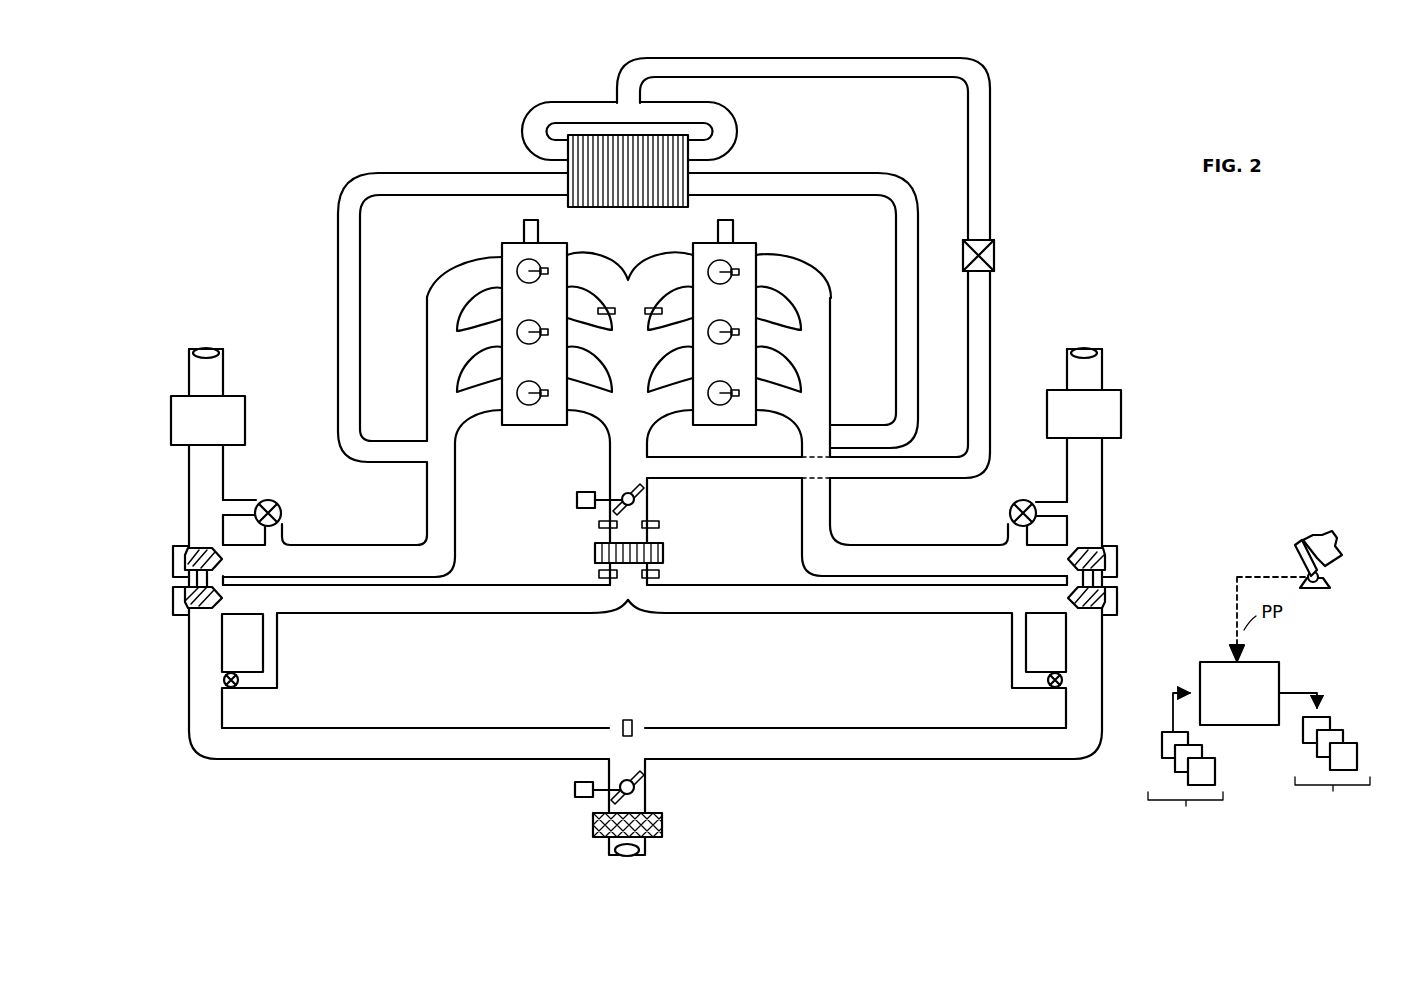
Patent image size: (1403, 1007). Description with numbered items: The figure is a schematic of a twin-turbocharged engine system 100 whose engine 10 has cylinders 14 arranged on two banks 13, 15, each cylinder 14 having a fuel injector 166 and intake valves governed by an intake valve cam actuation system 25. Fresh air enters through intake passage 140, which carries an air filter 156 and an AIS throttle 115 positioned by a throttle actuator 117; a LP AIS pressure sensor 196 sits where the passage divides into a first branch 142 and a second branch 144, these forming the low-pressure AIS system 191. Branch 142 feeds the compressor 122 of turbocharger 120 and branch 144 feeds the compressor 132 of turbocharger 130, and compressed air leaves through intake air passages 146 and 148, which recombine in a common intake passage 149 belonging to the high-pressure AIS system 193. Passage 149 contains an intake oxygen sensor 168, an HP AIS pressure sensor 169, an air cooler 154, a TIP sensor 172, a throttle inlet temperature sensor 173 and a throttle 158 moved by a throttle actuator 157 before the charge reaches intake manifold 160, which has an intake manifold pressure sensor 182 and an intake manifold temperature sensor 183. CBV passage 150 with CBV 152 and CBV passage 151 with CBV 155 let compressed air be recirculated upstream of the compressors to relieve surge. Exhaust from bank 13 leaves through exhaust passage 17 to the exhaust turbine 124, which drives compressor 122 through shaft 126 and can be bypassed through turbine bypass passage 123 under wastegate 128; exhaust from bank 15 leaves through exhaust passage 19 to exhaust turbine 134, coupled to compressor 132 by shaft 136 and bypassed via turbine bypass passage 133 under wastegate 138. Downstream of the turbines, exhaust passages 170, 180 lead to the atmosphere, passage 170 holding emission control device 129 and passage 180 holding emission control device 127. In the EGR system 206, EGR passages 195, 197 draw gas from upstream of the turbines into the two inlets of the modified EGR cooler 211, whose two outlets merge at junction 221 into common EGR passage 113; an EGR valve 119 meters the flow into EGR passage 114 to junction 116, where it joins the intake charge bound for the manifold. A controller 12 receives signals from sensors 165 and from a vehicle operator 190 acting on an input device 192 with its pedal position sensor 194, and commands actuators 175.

The turbocharged engine system 100 is at (220, 198).
The EGR system 206 is at (470, 116).
The junction 221 is at (614, 100).
The common EGR passage 113 is at (800, 80).
The modified EGR cooler 211 is at (700, 172).
The EGR valve 119 is at (990, 272).
The internal combustion engine 10 is at (438, 255).
The second bank 15 is at (507, 244).
The first bank 13 is at (748, 244).
The intake valve cam actuation system 25 is at (540, 230).
The cylinder 14 is at (731, 330).
The intake manifold 160 is at (629, 273).
The intake manifold pressure sensor 182 is at (607, 308).
The intake manifold temperature sensor 183 is at (653, 308).
The fuel injector 166 is at (739, 332).
The EGR passage 195 is at (338, 302).
The EGR passage 197 is at (895, 333).
The common exhaust passage 19 is at (456, 470).
The junction 116 is at (651, 456).
The common exhaust passage 17 is at (801, 520).
The EGR passage 114 is at (862, 480).
The exhaust passage 180 is at (189, 390).
The emission control device 127 is at (208, 420).
The turbine bypass passage 133 is at (238, 502).
The wastegate 138 is at (279, 505).
The turbocharger 130 is at (203, 531).
The compressor 132 is at (188, 610).
The exhaust turbine 134 is at (190, 550).
The shaft 136 is at (188, 592).
The exhaust passage 170 is at (1067, 386).
The emission control device 129 is at (1084, 414).
The turbine bypass passage 123 is at (1054, 502).
The wastegate 128 is at (1012, 505).
The turbocharger 120 is at (1087, 533).
The compressor 122 is at (1104, 610).
The exhaust turbine 124 is at (1104, 551).
The shaft 126 is at (1112, 592).
The intake air passage 148 is at (425, 599).
The intake air passage 146 is at (847, 656).
The throttle actuator 157 is at (577, 496).
The throttle 158 is at (624, 494).
The common intake passage 149 is at (648, 508).
The throttle inlet pressure sensor 172 is at (598, 528).
The throttle inlet temperature sensor 173 is at (660, 523).
The air cooler 154 is at (664, 550).
The HP AIS pressure sensor 169 is at (598, 576).
The intake oxygen sensor 168 is at (660, 576).
The CBV passage 150 is at (278, 672).
The compressor bypass valve 152 is at (234, 686).
The CBV passage 151 is at (1011, 676).
The compressor bypass valve 155 is at (1052, 688).
The second branch of the intake passage 144 is at (415, 740).
The first branch of the intake passage 142 is at (855, 740).
The high-pressure AIS system 193 is at (747, 634).
The low-pressure AIS system 191 is at (754, 702).
The LP AIS pressure sensor 196 is at (627, 719).
The intake passage 140 is at (646, 852).
The throttle actuator 117 is at (576, 784).
The AIS throttle 115 is at (629, 778).
The air filter 156 is at (662, 822).
The controller 12 is at (1239, 693).
The input device 192 is at (1293, 550).
The vehicle operator 190 is at (1322, 542).
The pedal position sensor 194 is at (1320, 580).
The sensors 165 is at (1185, 773).
The actuators 175 is at (1332, 762).